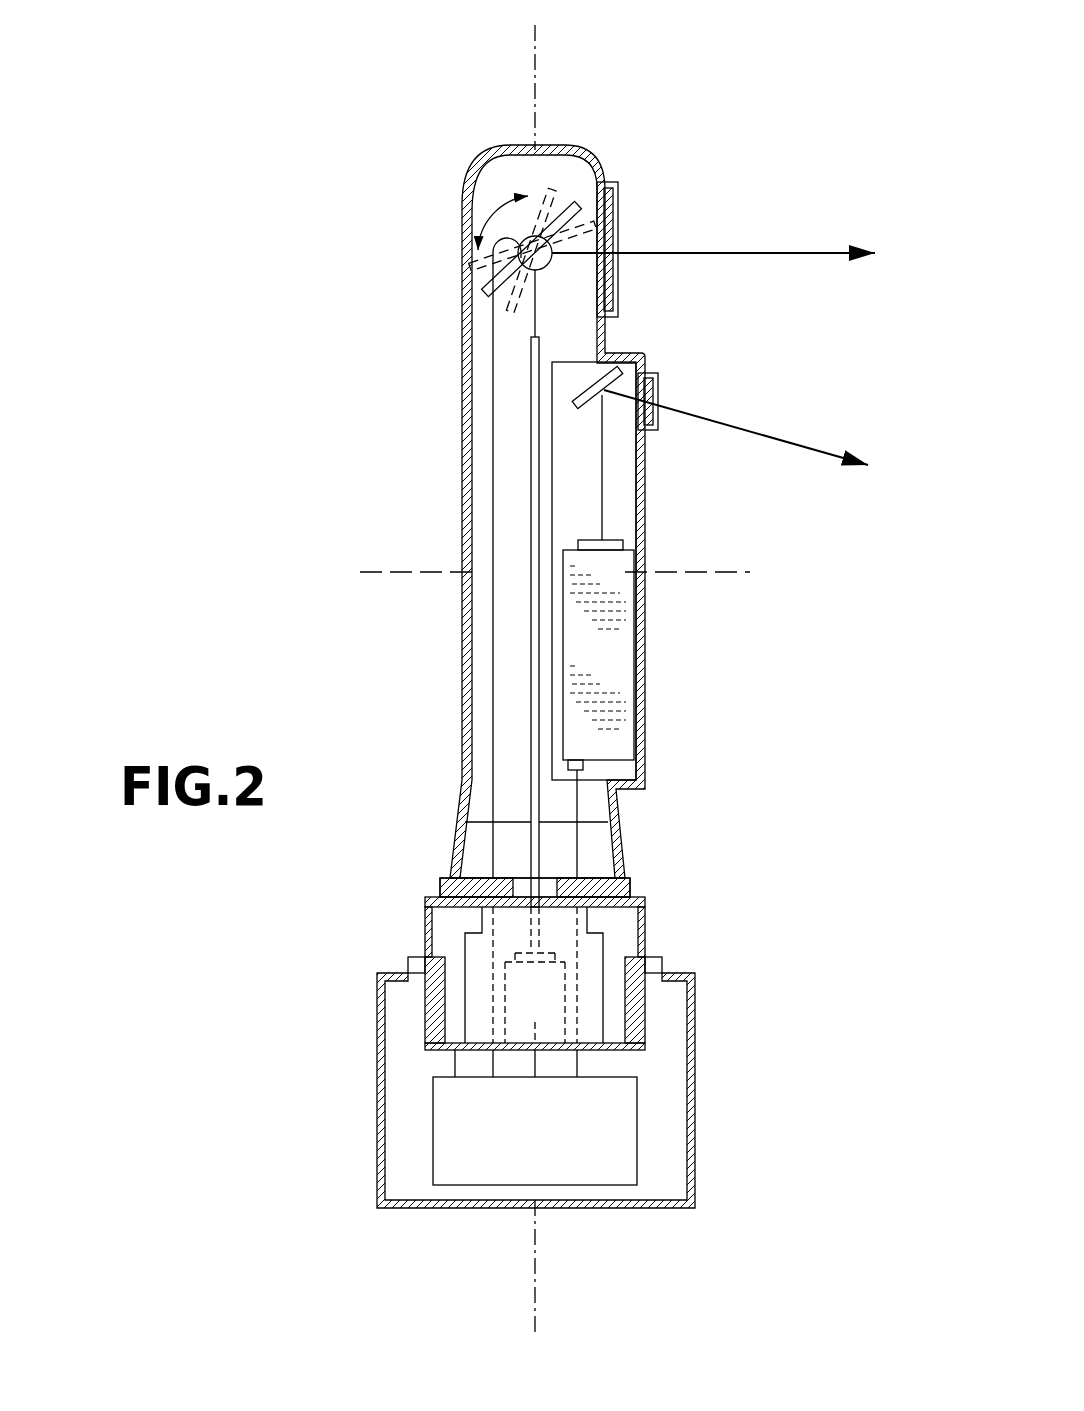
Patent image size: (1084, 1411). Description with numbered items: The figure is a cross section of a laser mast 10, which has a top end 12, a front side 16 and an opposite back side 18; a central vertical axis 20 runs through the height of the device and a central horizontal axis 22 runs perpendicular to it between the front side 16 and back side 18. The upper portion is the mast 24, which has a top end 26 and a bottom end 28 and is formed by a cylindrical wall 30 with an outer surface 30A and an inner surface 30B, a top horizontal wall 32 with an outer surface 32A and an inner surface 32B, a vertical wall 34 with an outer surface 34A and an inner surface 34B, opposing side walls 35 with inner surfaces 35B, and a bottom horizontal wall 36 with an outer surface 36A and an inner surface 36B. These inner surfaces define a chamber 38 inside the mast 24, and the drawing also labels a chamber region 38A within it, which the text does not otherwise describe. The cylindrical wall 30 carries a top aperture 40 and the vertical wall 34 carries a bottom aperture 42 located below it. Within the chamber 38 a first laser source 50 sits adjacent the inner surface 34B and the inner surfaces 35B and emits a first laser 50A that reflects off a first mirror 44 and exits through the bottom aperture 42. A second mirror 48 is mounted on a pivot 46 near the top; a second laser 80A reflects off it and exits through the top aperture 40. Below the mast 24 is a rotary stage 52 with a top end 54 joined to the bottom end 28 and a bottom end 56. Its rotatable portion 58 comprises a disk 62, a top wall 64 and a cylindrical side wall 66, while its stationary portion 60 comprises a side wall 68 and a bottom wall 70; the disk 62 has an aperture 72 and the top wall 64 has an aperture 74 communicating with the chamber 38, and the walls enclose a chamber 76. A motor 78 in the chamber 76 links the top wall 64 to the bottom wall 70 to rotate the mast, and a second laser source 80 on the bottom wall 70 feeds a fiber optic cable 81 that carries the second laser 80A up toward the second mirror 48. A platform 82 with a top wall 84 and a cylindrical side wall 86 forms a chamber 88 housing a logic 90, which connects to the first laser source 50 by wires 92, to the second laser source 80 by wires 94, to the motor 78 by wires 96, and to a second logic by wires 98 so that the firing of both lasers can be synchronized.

The laser mast 10 is at (728, 68).
The top end 12 is at (510, 140).
The front side 16 is at (657, 622).
The back side 18 is at (458, 606).
The central vertical axis 20 is at (537, 92).
The central horizontal axis 22 is at (686, 570).
The mast 24 is at (460, 302).
The top end 26 is at (495, 146).
The bottom end 28 is at (625, 864).
The cylindrical wall 30 is at (553, 515).
The outer surface 30A is at (460, 692).
The inner surface 30B is at (478, 730).
The top horizontal wall 32 is at (624, 511).
The outer surface 32A is at (620, 350).
The inner surface 32B is at (604, 386).
The vertical wall 34 is at (680, 571).
The outer surface 34A is at (650, 516).
The inner surface 34B is at (644, 485).
The opposing side walls 35 is at (471, 472).
The opposing inner surfaces 35B is at (579, 514).
The bottom horizontal wall 36 is at (632, 511).
The outer surface 36A is at (628, 795).
The inner surface 36B is at (638, 774).
The chamber 38 is at (513, 436).
The shaft 38A is at (573, 466).
The top aperture 40 is at (620, 228).
The bottom aperture 42 is at (660, 385).
The first mirror 44 is at (582, 413).
The pivot 46 is at (555, 258).
The second mirror 48 is at (577, 206).
The first laser source 50 is at (596, 650).
The first laser 50A is at (736, 422).
The rotary stage 52 is at (660, 918).
The top end 54 is at (436, 868).
The bottom end 56 is at (425, 1062).
The rotatable portion 58 is at (518, 976).
The stationary portion 60 is at (453, 1000).
The disk 62 is at (438, 890).
The top wall 64 is at (454, 916).
The cylindrical side wall 66 is at (420, 925).
The side wall 68 is at (425, 992).
The bottom wall 70 is at (650, 1050).
The aperture 72 is at (478, 877).
The aperture 74 is at (556, 911).
The chamber 76 is at (452, 937).
The motor 78 is at (592, 995).
The second laser source 80 is at (512, 994).
The second laser 80A is at (713, 220).
The fiber optic cable 81 is at (530, 786).
The platform 82 is at (572, 1090).
The top wall 84 is at (665, 973).
The cylindrical side wall 86 is at (692, 1128).
The chamber 88 is at (670, 1098).
The logic 90 is at (460, 1172).
The plurality of wires 92 is at (585, 848).
The plurality of wires 94 is at (535, 1062).
The plurality of wires 96 is at (455, 1062).
The plurality of wires 98 is at (493, 550).